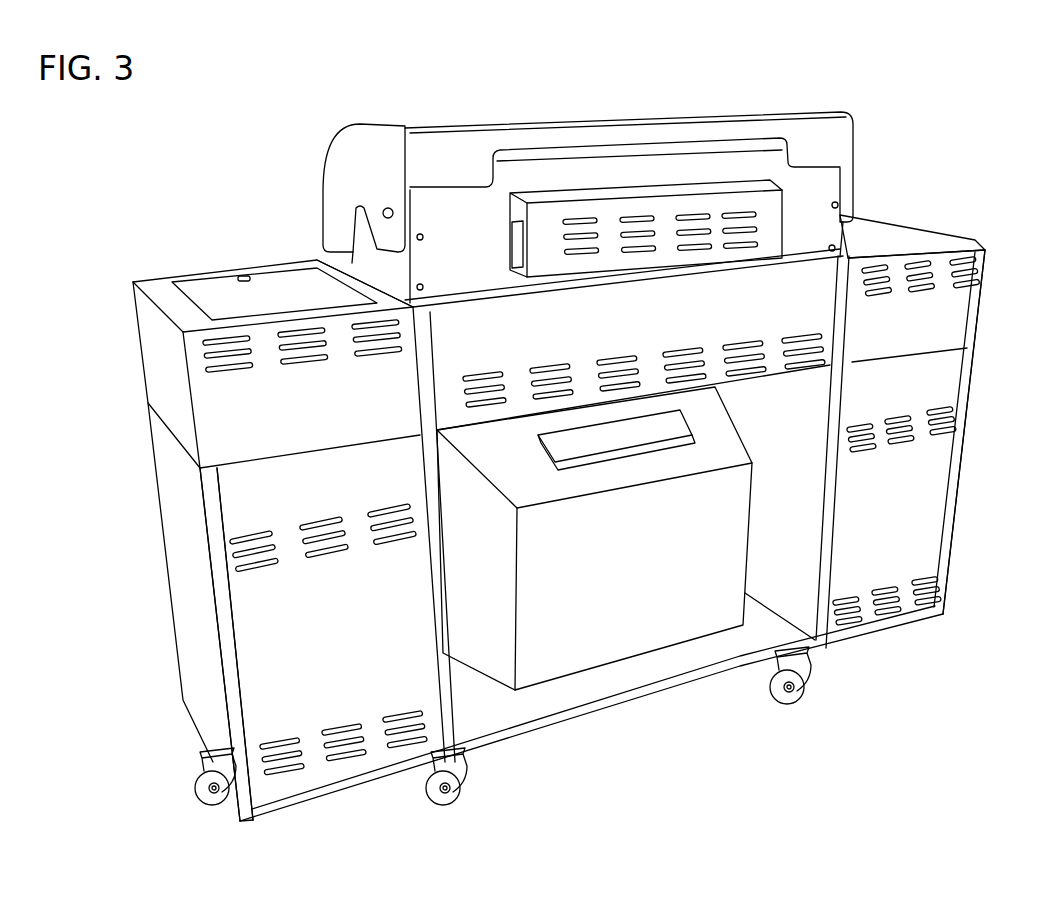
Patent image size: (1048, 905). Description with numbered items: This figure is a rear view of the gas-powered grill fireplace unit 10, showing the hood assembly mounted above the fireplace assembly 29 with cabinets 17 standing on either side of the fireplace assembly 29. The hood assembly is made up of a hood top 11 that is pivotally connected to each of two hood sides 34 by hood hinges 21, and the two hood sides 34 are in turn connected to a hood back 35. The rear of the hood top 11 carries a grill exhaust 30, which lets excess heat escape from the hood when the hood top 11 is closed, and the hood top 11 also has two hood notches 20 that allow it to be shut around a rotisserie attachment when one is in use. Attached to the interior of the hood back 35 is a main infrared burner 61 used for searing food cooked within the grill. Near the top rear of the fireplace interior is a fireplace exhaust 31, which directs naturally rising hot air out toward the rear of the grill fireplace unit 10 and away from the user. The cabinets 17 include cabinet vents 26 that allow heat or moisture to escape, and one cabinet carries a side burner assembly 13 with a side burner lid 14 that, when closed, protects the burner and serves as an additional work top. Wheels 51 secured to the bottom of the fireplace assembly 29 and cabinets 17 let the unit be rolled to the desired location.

The grill fireplace unit 10 is at (927, 78).
The hood top 11 is at (423, 130).
The side burner assembly 13 is at (201, 278).
The side burner lid 14 is at (215, 305).
The cabinets 17 is at (255, 632).
The hood notches 20 is at (357, 215).
The hood hinges 21 is at (387, 207).
The cabinet vents 26 is at (248, 533).
The fireplace assembly 29 is at (613, 587).
The grill exhaust 30 is at (767, 143).
The fireplace exhaust 31 is at (673, 430).
The hood sides 34 is at (375, 254).
The hood back 35 is at (537, 173).
The wheels 51 is at (200, 786).
The main infrared burner 61 is at (768, 217).